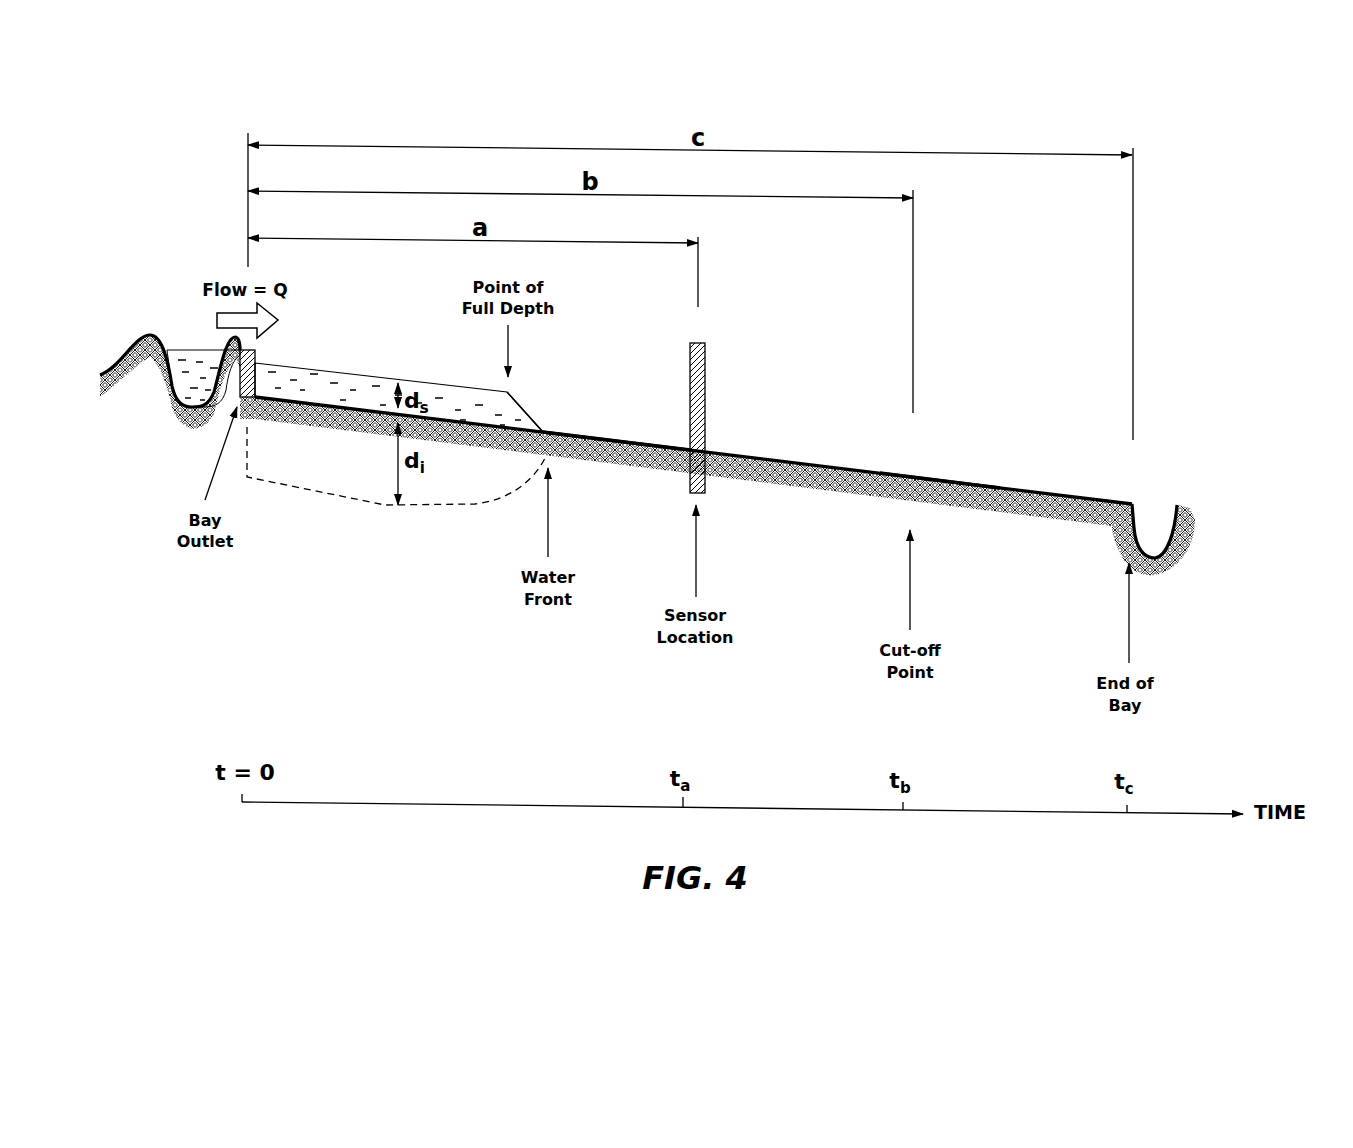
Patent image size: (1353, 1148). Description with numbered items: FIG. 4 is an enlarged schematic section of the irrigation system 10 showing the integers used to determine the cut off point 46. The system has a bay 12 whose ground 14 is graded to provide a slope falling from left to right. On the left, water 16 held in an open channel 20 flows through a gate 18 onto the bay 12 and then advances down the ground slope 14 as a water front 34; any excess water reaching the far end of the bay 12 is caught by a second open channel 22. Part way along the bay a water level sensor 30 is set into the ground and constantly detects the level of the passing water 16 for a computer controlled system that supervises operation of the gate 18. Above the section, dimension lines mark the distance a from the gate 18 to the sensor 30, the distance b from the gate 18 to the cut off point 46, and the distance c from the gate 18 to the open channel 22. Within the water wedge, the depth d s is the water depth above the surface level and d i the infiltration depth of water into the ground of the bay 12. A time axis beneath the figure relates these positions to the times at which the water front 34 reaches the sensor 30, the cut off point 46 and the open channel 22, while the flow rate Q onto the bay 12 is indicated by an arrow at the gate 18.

The irrigation system 10 is at (967, 408).
The bay 12 is at (773, 445).
The ground 14 is at (597, 435).
The water 16 is at (360, 387).
The gate 18 is at (255, 373).
The open channel 20 is at (192, 360).
The open channel 22 is at (1153, 517).
The water level sensor 30 is at (703, 375).
The water front 34 is at (543, 430).
The cut off point 46 is at (918, 475).